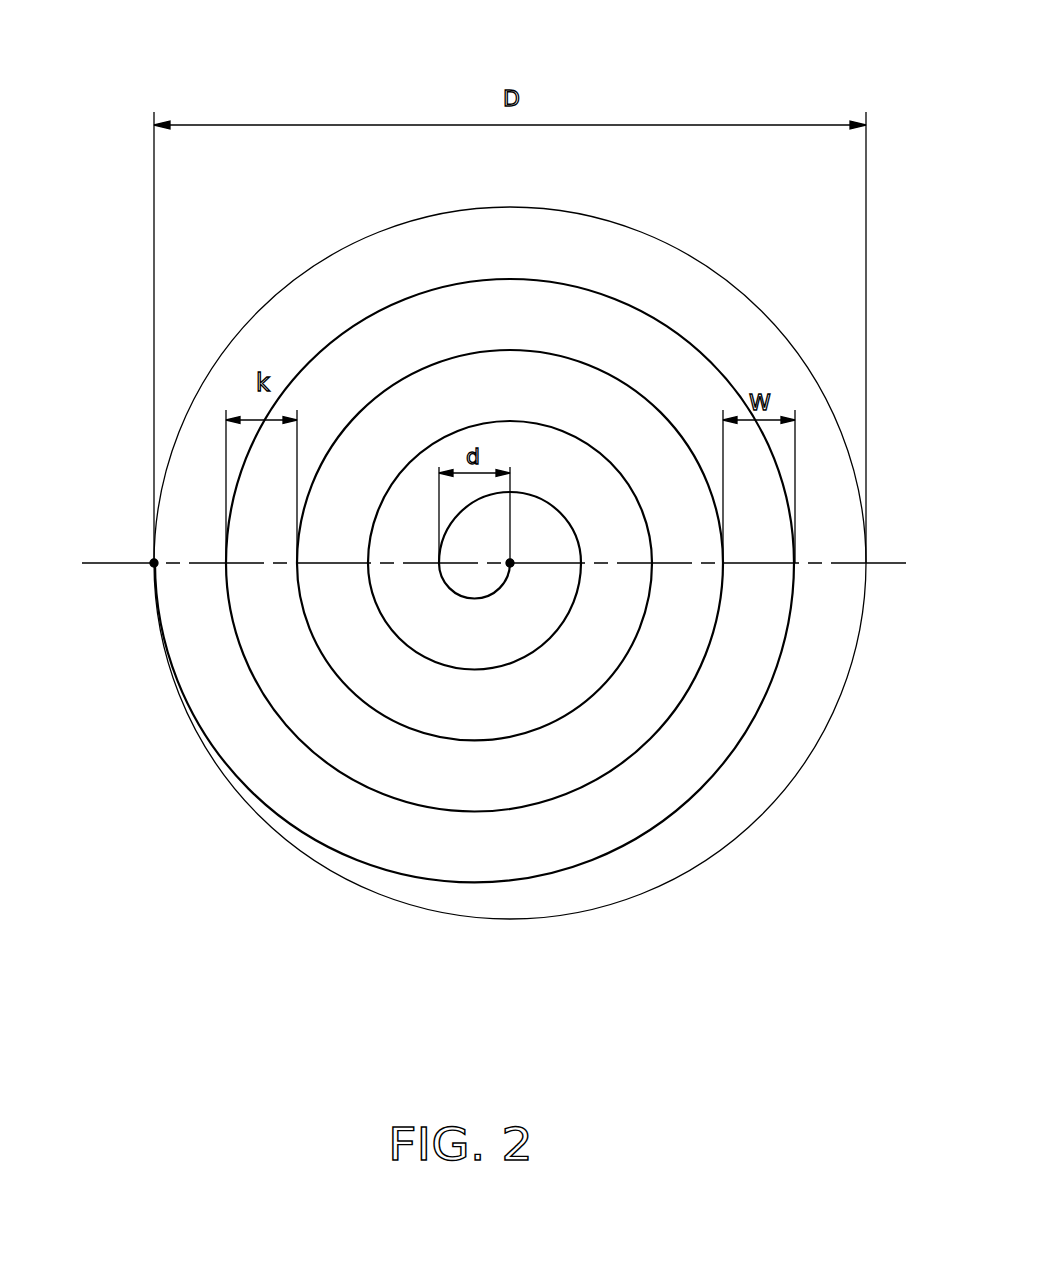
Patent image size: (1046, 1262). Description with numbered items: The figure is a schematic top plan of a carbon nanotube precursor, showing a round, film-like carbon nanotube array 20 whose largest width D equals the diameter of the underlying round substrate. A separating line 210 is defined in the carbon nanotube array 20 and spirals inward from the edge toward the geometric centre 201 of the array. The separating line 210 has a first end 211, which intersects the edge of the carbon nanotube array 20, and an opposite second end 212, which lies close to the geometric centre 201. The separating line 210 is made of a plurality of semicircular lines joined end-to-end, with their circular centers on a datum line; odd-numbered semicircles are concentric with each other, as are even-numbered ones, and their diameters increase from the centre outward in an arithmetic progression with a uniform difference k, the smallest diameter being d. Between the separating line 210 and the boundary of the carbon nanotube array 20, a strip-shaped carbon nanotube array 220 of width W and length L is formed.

The carbon nanotube array 20 is at (538, 462).
The strip-shaped carbon nanotube array 220 is at (768, 737).
The separating line 210 is at (695, 797).
The first end 211 is at (154, 563).
The second end 212 is at (510, 563).
The geometric centre 201 is at (510, 563).